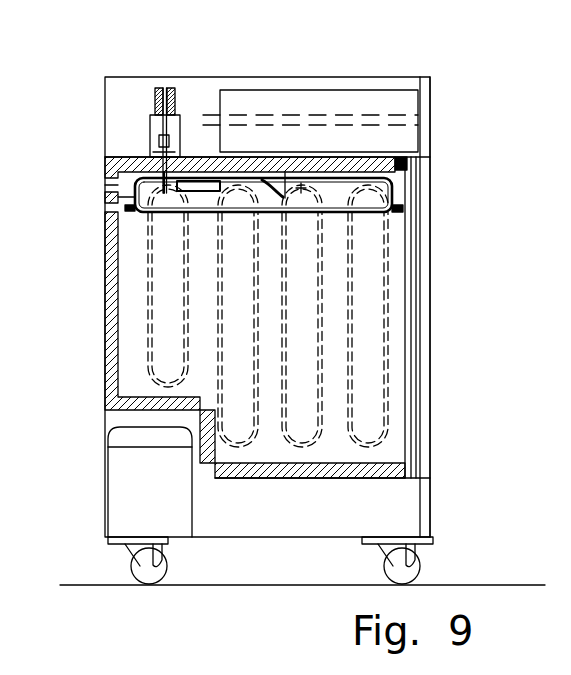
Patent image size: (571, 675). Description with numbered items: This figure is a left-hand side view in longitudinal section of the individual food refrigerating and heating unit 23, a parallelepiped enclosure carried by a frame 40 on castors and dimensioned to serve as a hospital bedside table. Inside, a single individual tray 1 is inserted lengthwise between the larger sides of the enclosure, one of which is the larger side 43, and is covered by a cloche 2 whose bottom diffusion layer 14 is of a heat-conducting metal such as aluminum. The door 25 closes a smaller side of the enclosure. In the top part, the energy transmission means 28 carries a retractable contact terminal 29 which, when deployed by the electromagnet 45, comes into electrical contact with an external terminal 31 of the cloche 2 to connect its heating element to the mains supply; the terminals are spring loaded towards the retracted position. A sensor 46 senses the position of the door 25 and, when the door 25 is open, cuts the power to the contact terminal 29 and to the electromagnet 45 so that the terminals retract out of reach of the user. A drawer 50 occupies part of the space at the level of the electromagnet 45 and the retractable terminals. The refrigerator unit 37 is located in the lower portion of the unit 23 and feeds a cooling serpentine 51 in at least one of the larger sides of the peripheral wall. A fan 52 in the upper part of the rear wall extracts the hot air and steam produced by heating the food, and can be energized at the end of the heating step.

The individual food refrigerating and heating unit 23 is at (89, 84).
The electromagnet 45 is at (155, 100).
The energy transmission means 28 is at (182, 84).
The drawer 50 is at (405, 105).
The contact terminal 29 is at (160, 142).
The fan 52 is at (99, 180).
The larger side 43 is at (0, 221).
The cloche 2 is at (105, 196).
The external terminal 31 is at (163, 182).
The individual tray 1 is at (186, 210).
The bottom diffusion layer 14 is at (135, 377).
The cooling serpentine 51 is at (388, 380).
The door 25 is at (423, 272).
The refrigerator unit 37 is at (115, 478).
The frame 40 is at (130, 563).
The sensor 46 is at (407, 168).